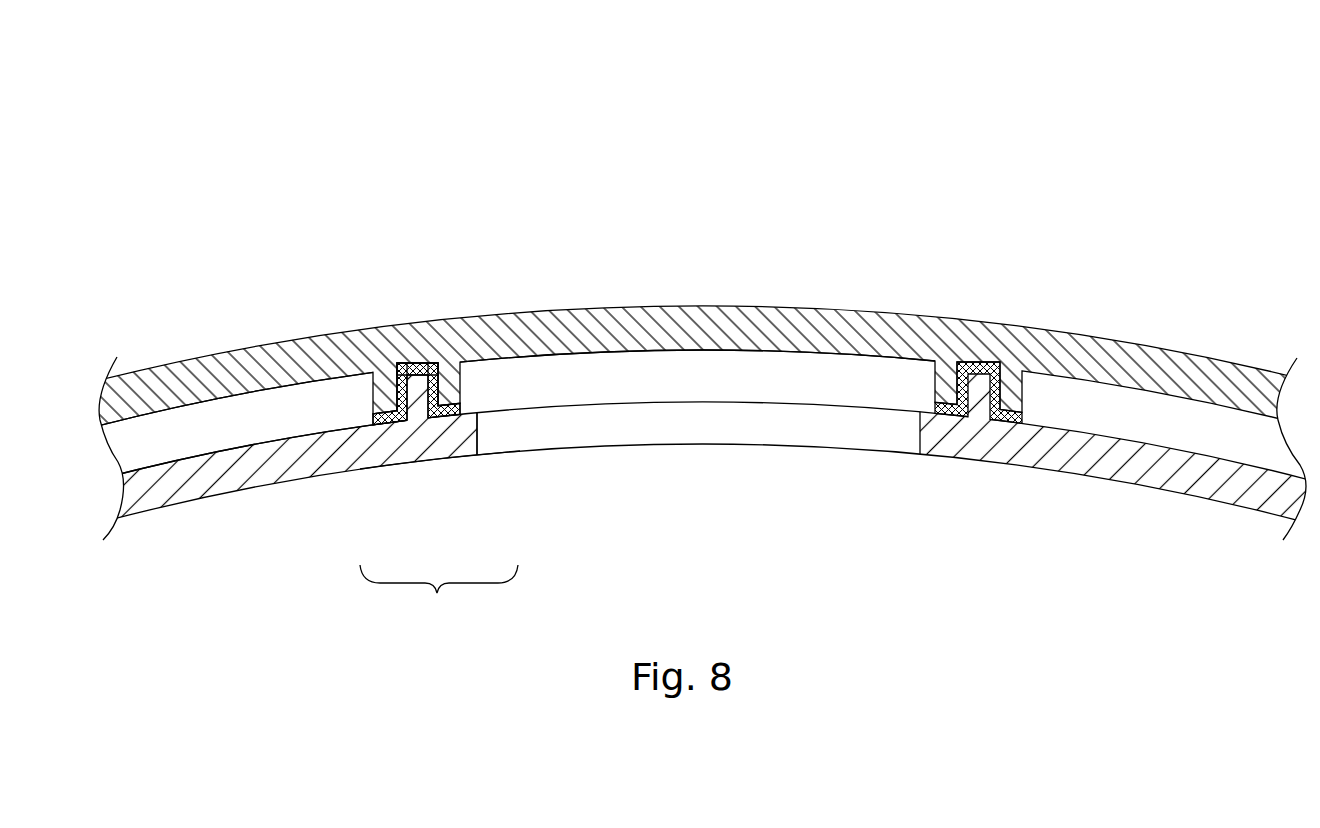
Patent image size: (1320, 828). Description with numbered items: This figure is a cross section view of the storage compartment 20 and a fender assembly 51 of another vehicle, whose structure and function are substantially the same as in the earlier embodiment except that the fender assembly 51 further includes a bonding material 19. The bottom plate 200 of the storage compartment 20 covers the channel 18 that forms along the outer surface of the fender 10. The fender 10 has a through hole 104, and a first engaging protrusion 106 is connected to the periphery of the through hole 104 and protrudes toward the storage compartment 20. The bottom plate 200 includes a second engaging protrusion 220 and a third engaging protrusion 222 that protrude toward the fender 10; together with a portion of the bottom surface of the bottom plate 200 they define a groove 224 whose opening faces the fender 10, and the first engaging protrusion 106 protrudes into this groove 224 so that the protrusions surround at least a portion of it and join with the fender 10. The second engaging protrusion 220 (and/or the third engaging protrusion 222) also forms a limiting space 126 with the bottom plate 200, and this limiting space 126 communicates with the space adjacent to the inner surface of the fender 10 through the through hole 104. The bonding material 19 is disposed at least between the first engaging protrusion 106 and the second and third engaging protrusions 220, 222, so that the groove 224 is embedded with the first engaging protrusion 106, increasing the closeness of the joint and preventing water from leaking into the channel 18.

The storage compartment 20 is at (341, 193).
The bottom plate 200 is at (304, 361).
The channel 18 is at (226, 421).
The limiting space 126 is at (572, 381).
The through hole 104 is at (669, 453).
The first engaging protrusion 106 is at (382, 404).
The second engaging protrusion 220 is at (452, 388).
The third engaging protrusion 222 is at (374, 392).
The groove 224 is at (416, 360).
The bonding material 19 is at (450, 412).
The fender 10 is at (381, 478).
The fender assembly 51 is at (439, 598).